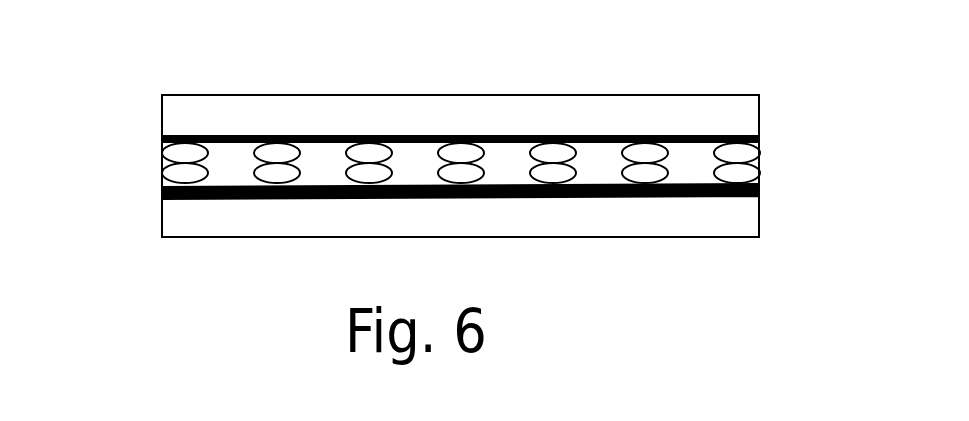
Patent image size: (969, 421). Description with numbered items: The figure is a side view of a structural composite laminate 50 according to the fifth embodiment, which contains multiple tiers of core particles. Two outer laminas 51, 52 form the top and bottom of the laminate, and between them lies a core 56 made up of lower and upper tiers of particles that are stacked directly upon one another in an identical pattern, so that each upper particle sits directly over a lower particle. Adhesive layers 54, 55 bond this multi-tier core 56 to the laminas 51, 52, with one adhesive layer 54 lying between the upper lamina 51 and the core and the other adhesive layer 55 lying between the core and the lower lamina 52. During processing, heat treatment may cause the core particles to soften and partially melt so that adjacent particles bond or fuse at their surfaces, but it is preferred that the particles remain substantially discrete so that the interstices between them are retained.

The touch sensor assembly 50 is at (270, 84).
The lamina 51 is at (160, 117).
The lamina 52 is at (643, 215).
The adhesive layer 54 is at (672, 138).
The adhesive layer 55 is at (234, 197).
The core 56 is at (160, 182).